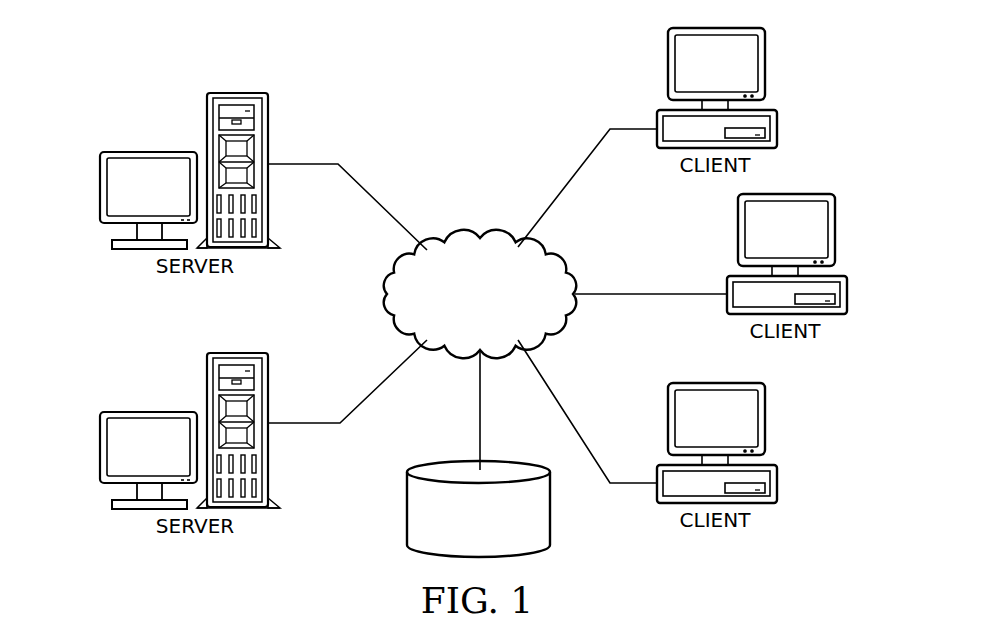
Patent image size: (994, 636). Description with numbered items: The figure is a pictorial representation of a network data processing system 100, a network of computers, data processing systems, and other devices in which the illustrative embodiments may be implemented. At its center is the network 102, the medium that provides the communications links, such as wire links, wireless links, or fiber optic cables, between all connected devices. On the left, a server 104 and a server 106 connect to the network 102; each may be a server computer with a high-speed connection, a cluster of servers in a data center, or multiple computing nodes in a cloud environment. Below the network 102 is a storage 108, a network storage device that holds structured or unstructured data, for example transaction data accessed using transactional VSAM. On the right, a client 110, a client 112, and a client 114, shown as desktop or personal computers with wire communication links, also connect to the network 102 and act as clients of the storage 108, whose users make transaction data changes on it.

The network data processing system 100 is at (343, 72).
The network 102 is at (452, 240).
The server 104 is at (100, 190).
The server 106 is at (100, 447).
The storage 108 is at (407, 507).
The client 110 is at (777, 118).
The client 112 is at (848, 305).
The client 114 is at (777, 493).